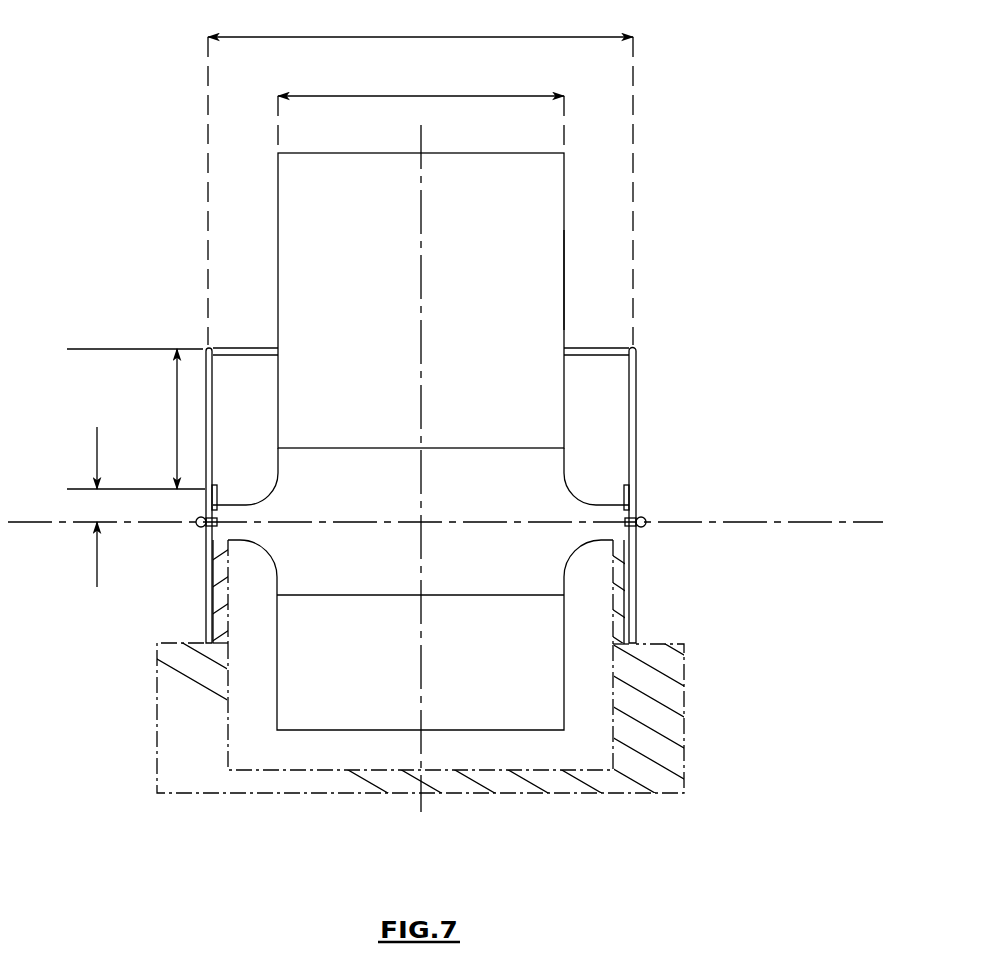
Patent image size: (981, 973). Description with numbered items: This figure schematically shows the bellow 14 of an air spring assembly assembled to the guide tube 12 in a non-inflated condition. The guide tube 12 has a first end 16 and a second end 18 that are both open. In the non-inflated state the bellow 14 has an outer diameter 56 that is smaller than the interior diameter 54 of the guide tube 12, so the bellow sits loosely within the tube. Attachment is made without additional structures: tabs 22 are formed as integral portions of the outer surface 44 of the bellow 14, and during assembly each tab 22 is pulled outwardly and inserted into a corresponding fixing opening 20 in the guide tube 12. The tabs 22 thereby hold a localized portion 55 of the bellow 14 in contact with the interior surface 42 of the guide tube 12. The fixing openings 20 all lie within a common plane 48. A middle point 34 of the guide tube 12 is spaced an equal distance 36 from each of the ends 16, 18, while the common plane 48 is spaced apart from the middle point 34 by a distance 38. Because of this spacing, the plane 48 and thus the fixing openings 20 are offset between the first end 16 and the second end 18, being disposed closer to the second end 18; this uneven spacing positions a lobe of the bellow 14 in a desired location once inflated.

The guide tube 12 is at (637, 388).
The bellow 14 is at (565, 209).
The first end 16 is at (456, 469).
The second end 18 is at (637, 651).
The fixing opening 20 is at (640, 496).
The tab 22 is at (199, 530).
The middle point 34 is at (216, 487).
The equal distance 36 is at (175, 398).
The distance 38 is at (93, 447).
The interior surface 42 is at (624, 438).
The outer surface 44 is at (572, 276).
The common plane 48 is at (803, 522).
The interior diameter 54 is at (475, 37).
The localized portion 55 is at (243, 548).
The outer diameter 56 is at (463, 96).